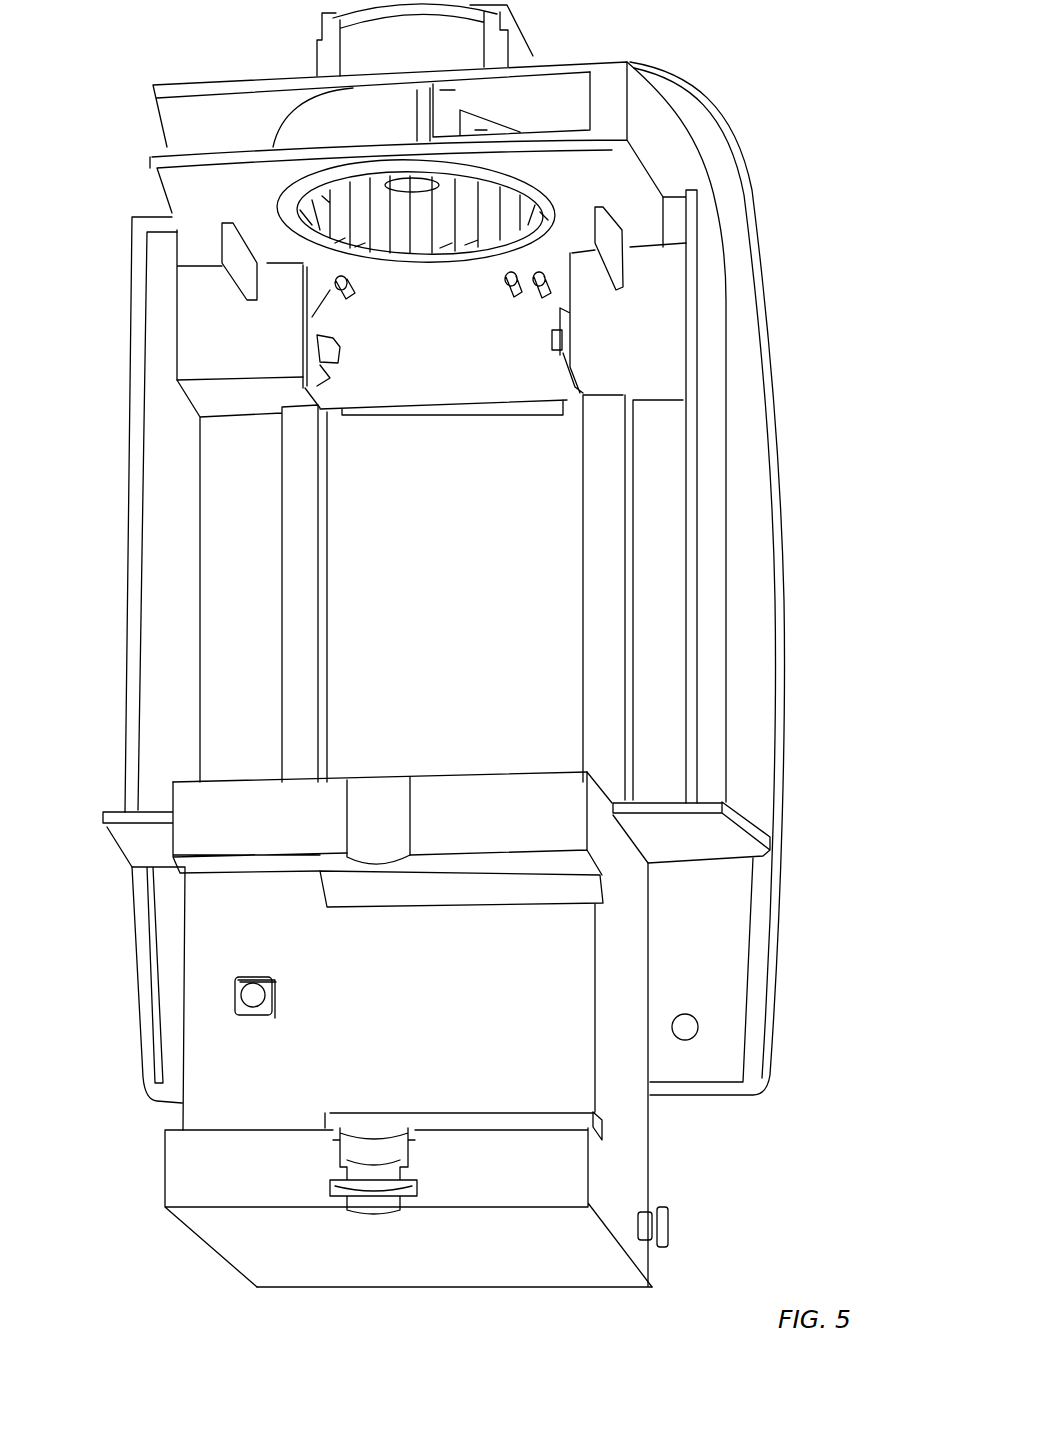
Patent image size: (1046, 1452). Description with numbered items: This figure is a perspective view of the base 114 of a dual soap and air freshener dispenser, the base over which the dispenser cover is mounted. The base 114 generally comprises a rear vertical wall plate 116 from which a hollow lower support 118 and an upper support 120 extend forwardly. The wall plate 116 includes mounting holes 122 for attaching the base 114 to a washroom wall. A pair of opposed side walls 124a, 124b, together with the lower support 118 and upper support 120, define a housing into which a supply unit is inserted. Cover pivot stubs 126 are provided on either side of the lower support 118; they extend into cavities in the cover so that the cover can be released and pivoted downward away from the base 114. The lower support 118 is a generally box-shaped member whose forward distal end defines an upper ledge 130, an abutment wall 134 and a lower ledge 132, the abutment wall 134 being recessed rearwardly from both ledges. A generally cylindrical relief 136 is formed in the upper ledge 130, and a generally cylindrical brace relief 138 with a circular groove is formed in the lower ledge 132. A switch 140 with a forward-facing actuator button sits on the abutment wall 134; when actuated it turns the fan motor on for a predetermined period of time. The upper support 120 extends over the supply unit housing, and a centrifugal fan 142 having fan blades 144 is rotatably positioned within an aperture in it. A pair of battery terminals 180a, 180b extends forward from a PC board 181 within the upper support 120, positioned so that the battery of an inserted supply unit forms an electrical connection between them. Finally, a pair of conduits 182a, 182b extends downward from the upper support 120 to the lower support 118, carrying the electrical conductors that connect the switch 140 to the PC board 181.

The base 114 is at (789, 92).
The rear vertical wall plate 116 is at (780, 785).
The hollow lower support 118 is at (651, 1148).
The upper support 120 is at (656, 158).
The mounting holes 122 is at (697, 1030).
The side wall 124a is at (126, 543).
The side wall 124b is at (707, 537).
The cover pivot stubs 126 is at (670, 1224).
The upper ledge 130 is at (115, 836).
The lower ledge 132 is at (163, 1168).
The abutment wall 134 is at (187, 915).
The cylindrical relief 136 is at (397, 798).
The brace relief 138 is at (383, 1163).
The switch 140 is at (233, 992).
The centrifugal fan 142 is at (314, 130).
The fan blades 144 is at (135, 224).
The battery terminal 180a is at (330, 545).
The battery terminal 180b is at (550, 337).
The PC board 181 is at (472, 402).
The conduit 182a is at (390, 345).
The conduit 182b is at (583, 533).